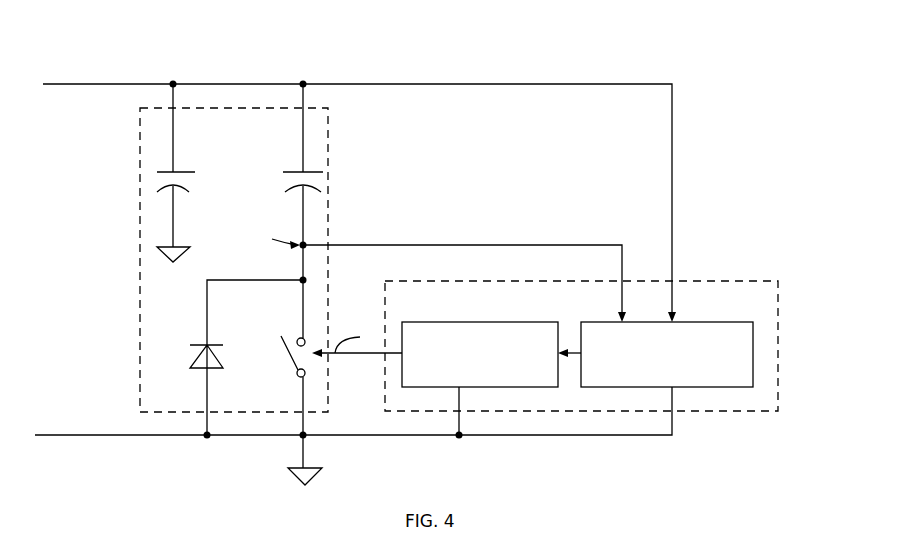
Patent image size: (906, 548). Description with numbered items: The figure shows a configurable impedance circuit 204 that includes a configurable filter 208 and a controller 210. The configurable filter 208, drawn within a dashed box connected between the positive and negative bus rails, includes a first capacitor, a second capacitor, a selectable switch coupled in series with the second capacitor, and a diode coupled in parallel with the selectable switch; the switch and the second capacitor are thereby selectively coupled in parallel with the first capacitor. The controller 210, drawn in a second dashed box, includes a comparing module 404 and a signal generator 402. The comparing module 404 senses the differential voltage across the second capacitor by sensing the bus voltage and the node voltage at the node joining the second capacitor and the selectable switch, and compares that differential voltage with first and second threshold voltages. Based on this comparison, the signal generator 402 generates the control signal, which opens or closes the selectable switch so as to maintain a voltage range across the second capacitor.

The configurable impedance circuit 204 is at (124, 52).
The configurable filter 208 is at (140, 272).
The controller 210 is at (697, 281).
The signal generator 402 is at (443, 322).
The comparing module 404 is at (697, 322).